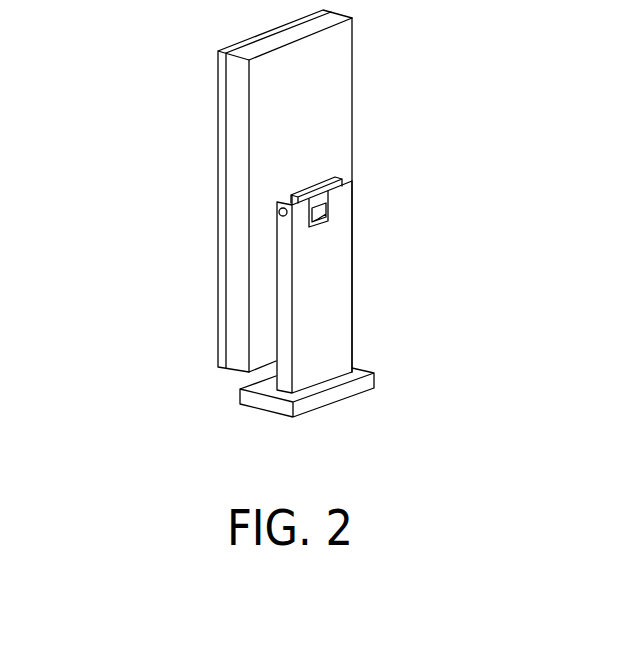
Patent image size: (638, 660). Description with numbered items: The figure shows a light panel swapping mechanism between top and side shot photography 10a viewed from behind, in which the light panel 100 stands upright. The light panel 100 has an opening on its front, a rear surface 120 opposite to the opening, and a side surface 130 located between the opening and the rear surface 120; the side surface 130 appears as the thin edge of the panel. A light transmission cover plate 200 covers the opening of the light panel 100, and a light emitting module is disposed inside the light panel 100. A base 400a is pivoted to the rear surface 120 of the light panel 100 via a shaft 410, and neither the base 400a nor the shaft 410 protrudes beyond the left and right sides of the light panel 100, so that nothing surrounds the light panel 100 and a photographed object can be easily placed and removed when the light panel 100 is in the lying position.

The light panel swapping mechanism between top and side shot photography 10a is at (302, 222).
The light panel 100 is at (281, 191).
The rear surface 120 is at (355, 96).
The side surface 130 is at (222, 149).
The light transmission cover plate 200 is at (217, 280).
The shaft 410 is at (279, 212).
The base 400a is at (375, 375).